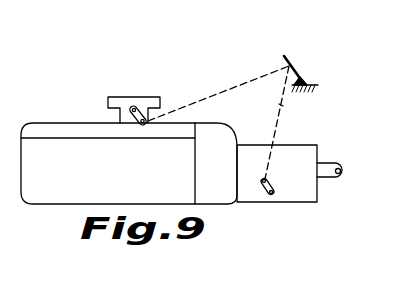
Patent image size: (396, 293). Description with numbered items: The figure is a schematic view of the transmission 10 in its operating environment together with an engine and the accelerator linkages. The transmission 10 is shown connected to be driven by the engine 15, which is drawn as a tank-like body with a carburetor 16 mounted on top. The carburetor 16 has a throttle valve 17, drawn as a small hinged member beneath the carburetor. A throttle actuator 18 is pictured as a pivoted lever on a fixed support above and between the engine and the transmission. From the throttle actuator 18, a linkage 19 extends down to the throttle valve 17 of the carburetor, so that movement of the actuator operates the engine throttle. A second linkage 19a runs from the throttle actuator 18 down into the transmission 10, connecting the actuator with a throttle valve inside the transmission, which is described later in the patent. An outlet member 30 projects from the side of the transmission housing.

The transmission 10 is at (306, 178).
The engine 15 is at (126, 176).
The carburetor 16 is at (117, 96).
The throttle valve 17 is at (146, 104).
The throttle actuator 18 is at (293, 70).
The linkage 19 is at (223, 92).
The linkage 19a is at (282, 106).
The nozzle 30 is at (333, 163).